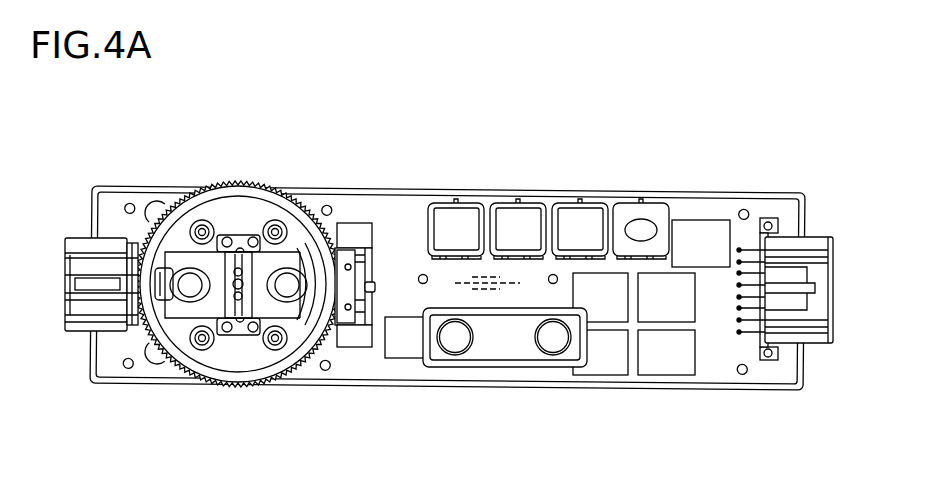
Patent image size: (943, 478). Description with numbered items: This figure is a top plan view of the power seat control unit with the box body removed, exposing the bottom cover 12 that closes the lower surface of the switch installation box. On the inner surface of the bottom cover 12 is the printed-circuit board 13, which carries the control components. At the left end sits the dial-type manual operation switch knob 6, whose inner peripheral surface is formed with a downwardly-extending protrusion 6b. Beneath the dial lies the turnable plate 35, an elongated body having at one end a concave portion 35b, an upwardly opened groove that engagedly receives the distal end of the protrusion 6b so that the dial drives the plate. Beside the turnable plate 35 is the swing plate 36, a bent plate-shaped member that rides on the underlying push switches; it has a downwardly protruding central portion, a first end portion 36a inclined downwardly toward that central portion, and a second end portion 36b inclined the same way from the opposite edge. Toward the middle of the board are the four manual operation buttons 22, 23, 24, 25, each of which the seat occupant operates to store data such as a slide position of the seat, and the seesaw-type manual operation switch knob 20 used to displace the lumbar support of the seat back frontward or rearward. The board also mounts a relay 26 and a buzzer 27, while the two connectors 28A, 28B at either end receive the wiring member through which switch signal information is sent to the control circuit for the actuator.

The dial-type manual operation switch knob 6 is at (226, 183).
The downwardly-extending protrusion 6b is at (145, 207).
The concave portion 35b is at (160, 272).
The bottom cover 12 is at (448, 284).
The printed-circuit board 13 is at (410, 208).
The seesaw-type manual operation switch knob 20 is at (525, 353).
The manual operation button 22 is at (633, 213).
The manual operation button 23 is at (577, 213).
The manual operation button 24 is at (520, 213).
The manual operation button 25 is at (463, 213).
The relay 26 is at (610, 362).
The buzzer 27 is at (403, 343).
The connector 28A is at (87, 310).
The connector 28B is at (817, 312).
The turnable plate 35 is at (208, 282).
The swing plate 36 is at (343, 283).
The first end portion 36a is at (352, 342).
The second end portion 36b is at (345, 221).